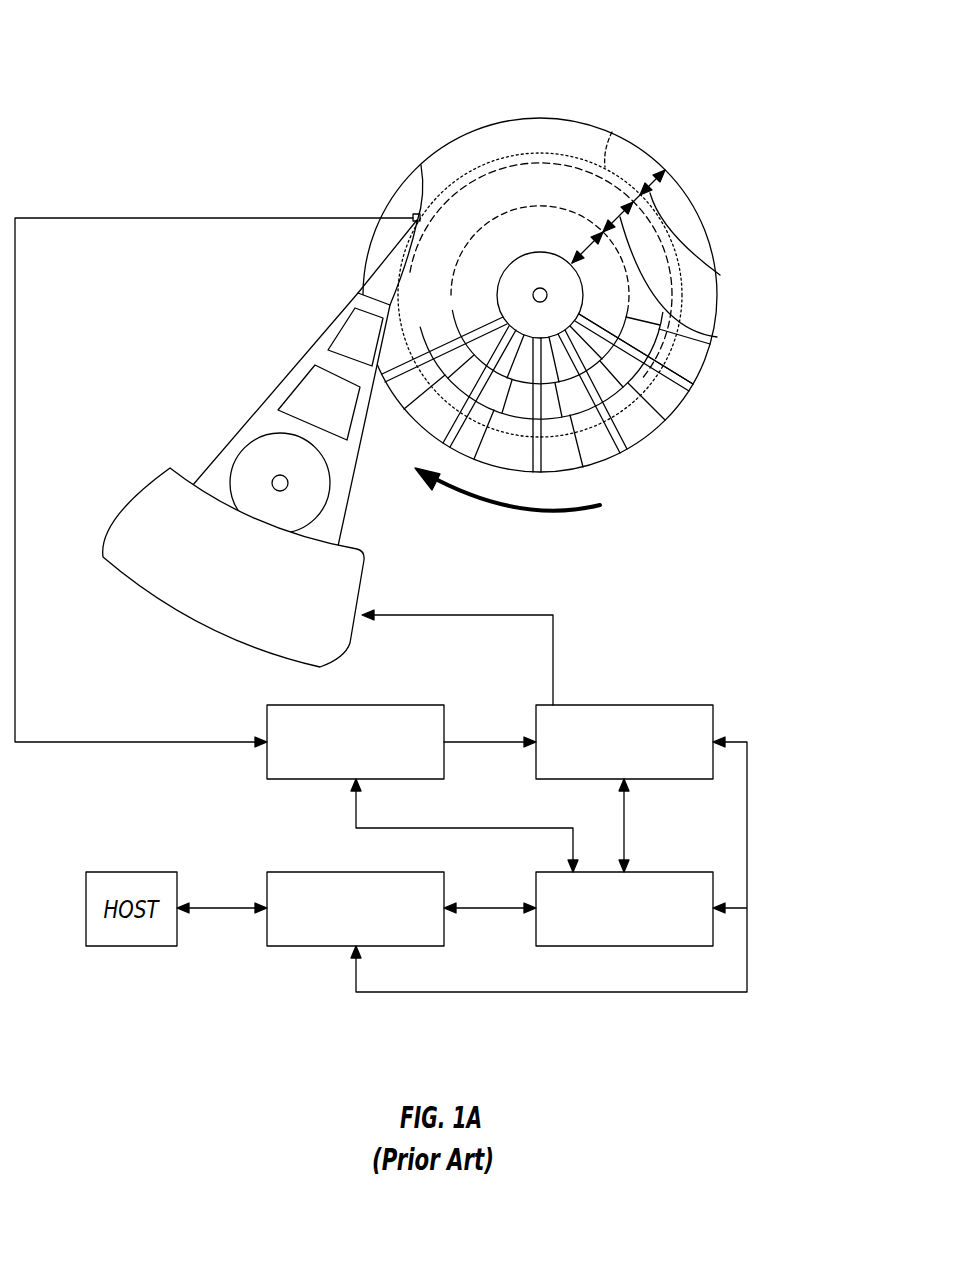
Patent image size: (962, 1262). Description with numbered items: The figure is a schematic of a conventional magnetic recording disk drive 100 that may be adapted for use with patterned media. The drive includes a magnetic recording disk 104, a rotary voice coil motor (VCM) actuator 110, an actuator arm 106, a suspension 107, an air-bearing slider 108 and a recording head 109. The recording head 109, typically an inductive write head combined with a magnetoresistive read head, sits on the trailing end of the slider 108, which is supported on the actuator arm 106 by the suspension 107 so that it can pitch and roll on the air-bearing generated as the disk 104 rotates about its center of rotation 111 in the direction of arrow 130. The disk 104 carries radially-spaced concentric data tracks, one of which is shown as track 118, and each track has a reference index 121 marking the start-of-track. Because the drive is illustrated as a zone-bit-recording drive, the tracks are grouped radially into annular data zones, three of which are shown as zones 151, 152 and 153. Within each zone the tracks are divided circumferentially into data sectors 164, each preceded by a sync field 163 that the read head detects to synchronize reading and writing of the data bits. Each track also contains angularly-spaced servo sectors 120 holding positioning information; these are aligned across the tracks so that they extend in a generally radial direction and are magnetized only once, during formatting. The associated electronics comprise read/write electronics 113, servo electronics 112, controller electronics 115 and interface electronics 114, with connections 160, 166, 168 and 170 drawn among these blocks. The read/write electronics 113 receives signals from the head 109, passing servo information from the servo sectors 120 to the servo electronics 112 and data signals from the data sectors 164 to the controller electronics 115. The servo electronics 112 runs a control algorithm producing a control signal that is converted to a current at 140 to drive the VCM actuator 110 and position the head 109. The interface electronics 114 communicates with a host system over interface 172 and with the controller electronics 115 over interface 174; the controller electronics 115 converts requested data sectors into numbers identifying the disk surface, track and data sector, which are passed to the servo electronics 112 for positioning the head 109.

The disk drive 100 is at (117, 46).
The magnetic recording disk 104 is at (497, 122).
The actuator arm 106 is at (333, 318).
The suspension 107 is at (380, 270).
The air-bearing slider 108 is at (416, 215).
The recording head 109 is at (421, 167).
The rotary voice coil motor actuator 110 is at (168, 476).
The center of rotation 111 is at (540, 288).
The servo electronics 112 is at (690, 705).
The read/write electronics 113 is at (420, 705).
The interface electronics 114 is at (290, 871).
The controller electronics 115 is at (557, 946).
The data track 118 is at (612, 132).
The servo sectors 120 is at (620, 450).
The reference index 121 is at (690, 385).
The direction of rotation arrow 130 is at (545, 512).
The control current 140 is at (555, 641).
The data zone 151 is at (720, 264).
The data zone 152 is at (716, 331).
The data zone 153 is at (588, 243).
The servo-controller bus 160 is at (628, 831).
The sync fields 163 is at (655, 420).
The data sectors 164 is at (672, 406).
The read/write data line 166 is at (493, 747).
The controller to read/write line 168 is at (520, 828).
The controller bus 170 is at (750, 836).
The host interface 172 is at (223, 907).
The controller interface 174 is at (490, 905).